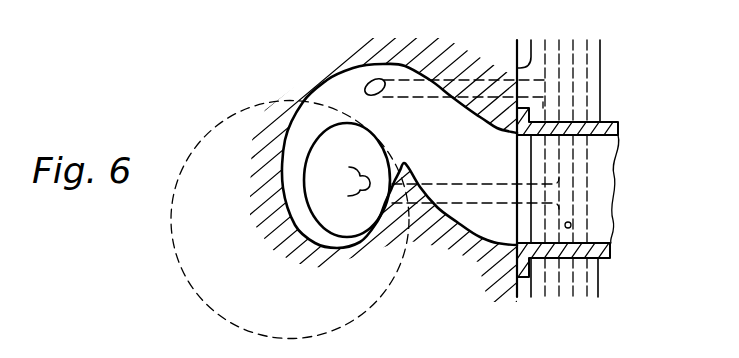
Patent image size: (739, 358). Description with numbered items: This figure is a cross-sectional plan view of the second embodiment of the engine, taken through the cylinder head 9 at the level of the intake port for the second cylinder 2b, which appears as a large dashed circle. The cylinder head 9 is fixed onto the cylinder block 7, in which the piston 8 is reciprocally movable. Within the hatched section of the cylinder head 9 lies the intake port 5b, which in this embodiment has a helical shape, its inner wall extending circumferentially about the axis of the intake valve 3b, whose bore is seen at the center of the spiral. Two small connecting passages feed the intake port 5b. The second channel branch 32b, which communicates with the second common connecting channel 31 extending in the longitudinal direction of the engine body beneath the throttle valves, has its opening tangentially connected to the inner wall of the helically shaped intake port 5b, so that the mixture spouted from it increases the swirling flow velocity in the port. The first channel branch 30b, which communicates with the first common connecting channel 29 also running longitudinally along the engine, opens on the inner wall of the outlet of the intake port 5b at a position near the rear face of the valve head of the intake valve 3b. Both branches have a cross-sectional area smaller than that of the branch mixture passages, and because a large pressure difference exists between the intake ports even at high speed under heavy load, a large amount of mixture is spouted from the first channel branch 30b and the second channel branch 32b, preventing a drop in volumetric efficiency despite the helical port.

The No. 2 cylinder 2b is at (223, 316).
The intake valve 3b is at (313, 167).
The intake port 5b is at (470, 160).
The cylinder block 7 is at (299, 0).
The piston 8 is at (197, 0).
The cylinder head 9 is at (490, 70).
The first common connecting channel 29 is at (586, 164).
The first channel branch 30b is at (468, 197).
The second common connecting channel 31 is at (571, 225).
The second channel branch 32b is at (424, 78).